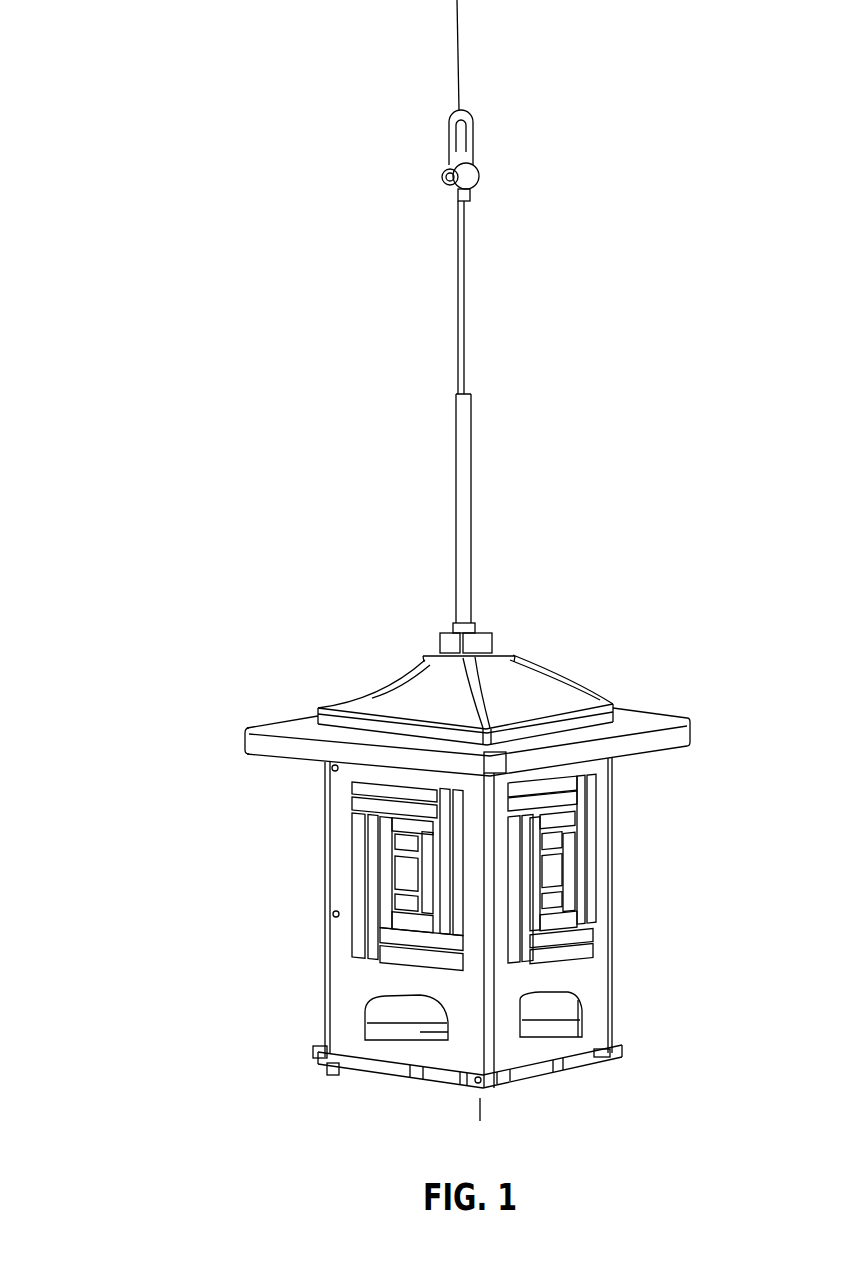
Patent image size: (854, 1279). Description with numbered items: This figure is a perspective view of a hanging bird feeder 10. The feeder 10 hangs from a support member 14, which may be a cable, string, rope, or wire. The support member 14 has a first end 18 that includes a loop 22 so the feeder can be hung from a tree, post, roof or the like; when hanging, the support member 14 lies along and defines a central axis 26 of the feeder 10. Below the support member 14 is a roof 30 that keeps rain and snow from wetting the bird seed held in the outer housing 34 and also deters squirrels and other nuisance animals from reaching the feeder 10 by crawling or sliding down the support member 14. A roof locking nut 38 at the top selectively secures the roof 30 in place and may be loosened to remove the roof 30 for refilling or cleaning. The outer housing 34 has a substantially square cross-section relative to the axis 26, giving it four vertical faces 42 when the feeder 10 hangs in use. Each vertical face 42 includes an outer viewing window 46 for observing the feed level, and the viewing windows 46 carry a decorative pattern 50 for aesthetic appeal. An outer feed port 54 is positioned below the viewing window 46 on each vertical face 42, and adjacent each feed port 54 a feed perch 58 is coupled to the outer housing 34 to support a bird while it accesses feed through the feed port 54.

The bird feeder 10 is at (127, 325).
The support member 14 is at (465, 390).
The first end 18 is at (462, 108).
The loop 22 is at (448, 143).
The central axis 26 is at (460, 55).
The roof 30 is at (535, 693).
The outer housing 34 is at (343, 875).
The roof locking nut 38 is at (480, 637).
The vertical face 42 is at (567, 977).
The outer viewing window 46 is at (553, 870).
The decorative pattern 50 is at (573, 900).
The outer feed port 54 is at (573, 1013).
The feed perch 58 is at (613, 1057).